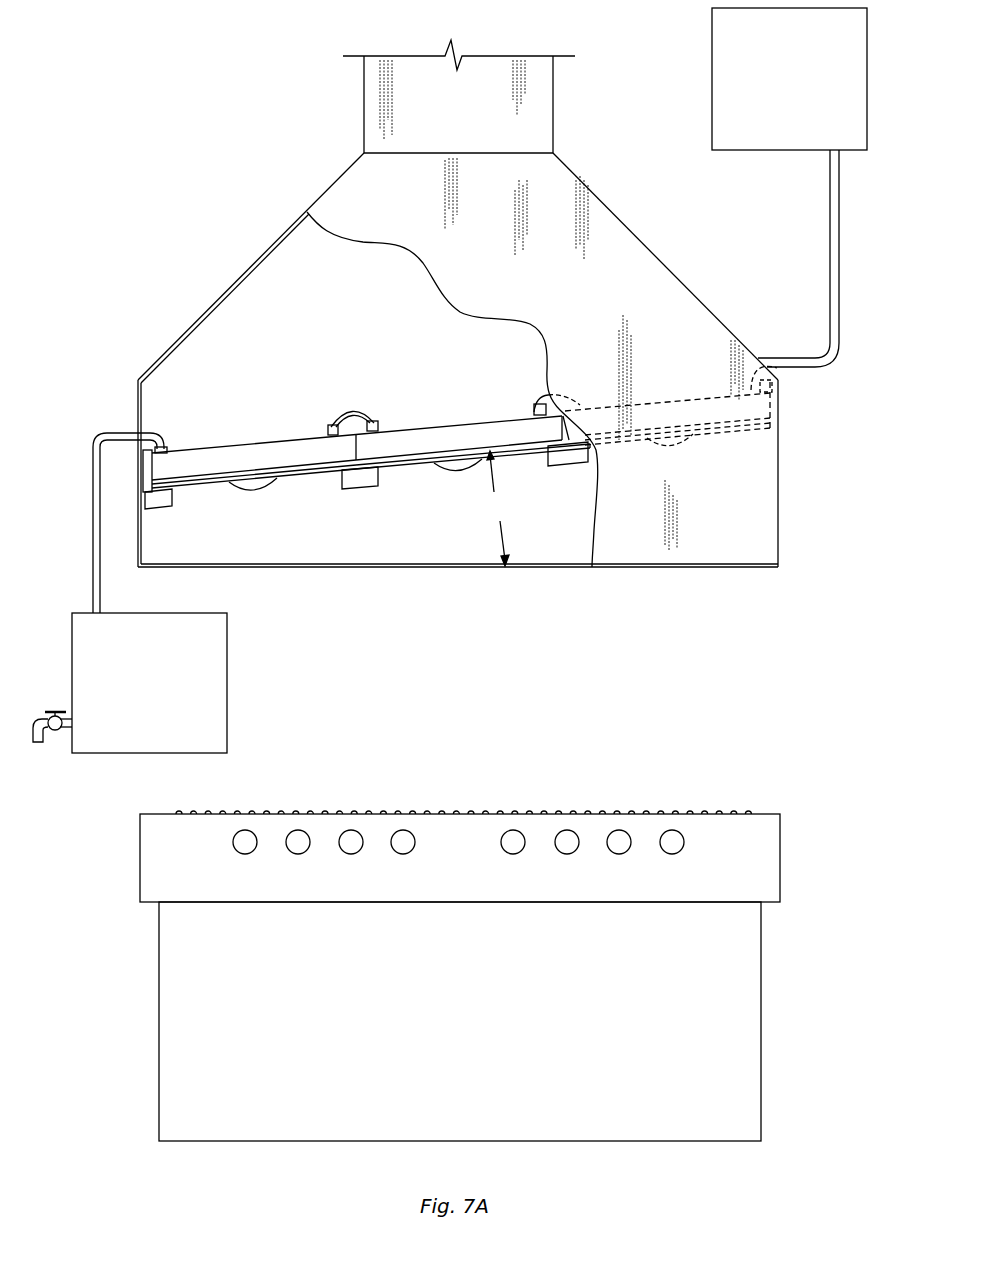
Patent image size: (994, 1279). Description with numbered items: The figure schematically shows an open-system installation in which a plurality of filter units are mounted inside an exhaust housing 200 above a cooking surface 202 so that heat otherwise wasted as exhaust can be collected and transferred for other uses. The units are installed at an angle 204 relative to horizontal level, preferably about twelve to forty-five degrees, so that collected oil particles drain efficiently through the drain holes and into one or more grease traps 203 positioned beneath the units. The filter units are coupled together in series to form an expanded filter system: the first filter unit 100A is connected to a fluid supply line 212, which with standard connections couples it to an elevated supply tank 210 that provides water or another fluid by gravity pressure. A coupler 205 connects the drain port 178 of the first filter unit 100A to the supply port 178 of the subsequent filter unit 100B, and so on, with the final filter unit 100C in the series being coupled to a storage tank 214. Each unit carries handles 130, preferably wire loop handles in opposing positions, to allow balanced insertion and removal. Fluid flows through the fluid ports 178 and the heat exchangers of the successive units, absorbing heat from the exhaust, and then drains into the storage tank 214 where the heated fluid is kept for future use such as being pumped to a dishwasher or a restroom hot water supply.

The first filter unit 100A is at (680, 408).
The subsequent filter unit 100B is at (455, 432).
The final filter unit 100C is at (237, 463).
The handle 130 is at (254, 492).
The fluid port 178 is at (179, 446).
The exhaust housing 200 is at (544, 289).
The cooking surface 202 is at (537, 811).
The grease trap 203 is at (160, 500).
The angle 204 is at (502, 508).
The coupler 205 is at (352, 410).
The supply tank 210 is at (771, 89).
The fluid supply line 212 is at (828, 268).
The storage tank 214 is at (124, 691).